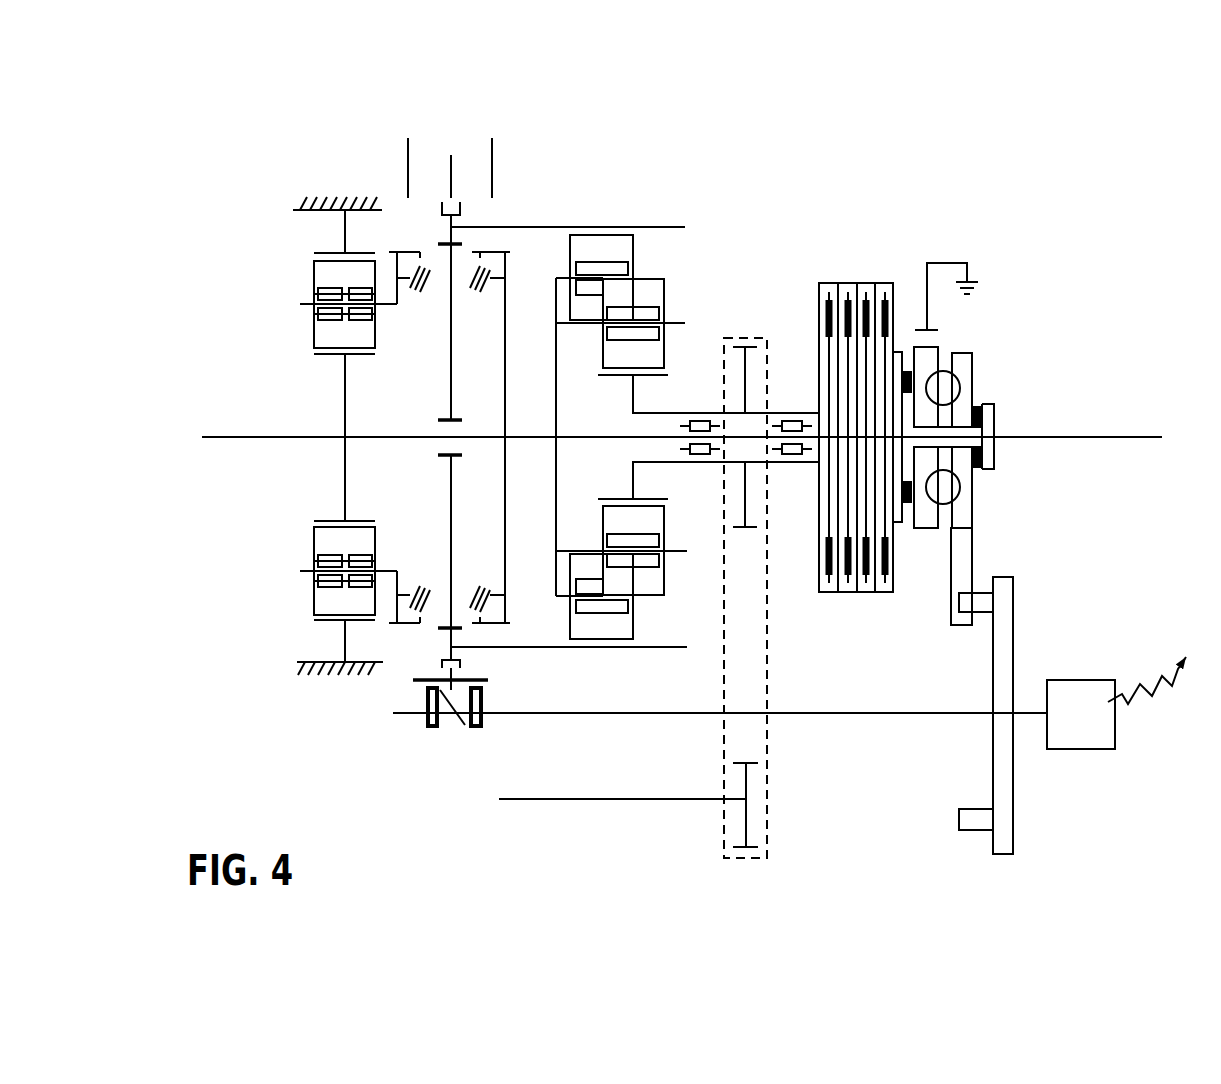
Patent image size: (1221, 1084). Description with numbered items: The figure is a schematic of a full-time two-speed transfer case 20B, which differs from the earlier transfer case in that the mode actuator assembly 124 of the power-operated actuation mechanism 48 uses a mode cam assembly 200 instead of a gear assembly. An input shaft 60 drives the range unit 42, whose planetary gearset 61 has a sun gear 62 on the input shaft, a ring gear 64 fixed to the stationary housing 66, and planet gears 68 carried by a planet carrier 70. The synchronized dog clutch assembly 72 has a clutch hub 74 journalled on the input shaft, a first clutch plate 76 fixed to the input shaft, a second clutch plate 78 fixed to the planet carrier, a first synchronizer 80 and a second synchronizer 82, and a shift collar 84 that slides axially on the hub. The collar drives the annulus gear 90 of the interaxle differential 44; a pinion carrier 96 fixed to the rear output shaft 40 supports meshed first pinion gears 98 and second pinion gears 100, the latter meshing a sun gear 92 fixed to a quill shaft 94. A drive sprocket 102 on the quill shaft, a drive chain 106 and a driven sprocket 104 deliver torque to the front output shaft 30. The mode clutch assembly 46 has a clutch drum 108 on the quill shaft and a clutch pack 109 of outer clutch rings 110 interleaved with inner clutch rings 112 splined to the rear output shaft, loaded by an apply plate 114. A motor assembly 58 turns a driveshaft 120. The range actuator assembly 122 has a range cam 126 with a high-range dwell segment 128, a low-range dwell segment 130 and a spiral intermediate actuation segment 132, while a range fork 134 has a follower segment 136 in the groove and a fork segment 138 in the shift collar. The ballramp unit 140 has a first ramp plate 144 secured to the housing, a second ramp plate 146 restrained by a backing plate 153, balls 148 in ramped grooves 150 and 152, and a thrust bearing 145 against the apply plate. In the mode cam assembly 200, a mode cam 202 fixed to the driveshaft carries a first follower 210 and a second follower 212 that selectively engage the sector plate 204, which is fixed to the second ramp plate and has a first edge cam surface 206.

The transfer case 20B is at (884, 114).
The front output shaft 30 is at (592, 808).
The rear output shaft 40 is at (1160, 437).
The range unit 42 is at (499, 198).
The interaxle differential 44 is at (684, 266).
The mode clutch assembly 46 is at (879, 263).
The power-operated actuation mechanism 48 is at (911, 762).
The motor assembly 58 is at (1080, 695).
The input shaft 60 is at (255, 440).
The planetary gearset 61 is at (288, 554).
The sun gear 62 is at (345, 370).
The ring gear 64 is at (332, 253).
The stationary housing 66 is at (297, 210).
The planet gears 68 is at (322, 272).
The planet carrier 70 is at (398, 562).
The synchronized dog clutch assembly 72 is at (427, 309).
The clutch hub 74 is at (452, 540).
The first clutch plate 76 is at (505, 350).
The second clutch plate 78 is at (408, 586).
The first synchronizer 80 is at (478, 266).
The second synchronizer 82 is at (425, 612).
The shift collar 84 is at (442, 227).
The annulus gear 90 is at (538, 227).
The sun gear 92 is at (635, 490).
The quill shaft 94 is at (645, 413).
The pinion carrier 96 is at (556, 398).
The first pinion gears 98 is at (622, 245).
The second pinion gears 100 is at (660, 290).
The drive sprocket 102 is at (745, 493).
The driven sprocket 104 is at (748, 778).
The drive chain 106 is at (767, 660).
The clutch drum 108 is at (820, 288).
The clutch pack 109 is at (838, 397).
The outer clutch rings 110 is at (837, 290).
The inner clutch rings 112 is at (846, 461).
The apply plate 114 is at (906, 548).
The driveshaft 120 is at (875, 713).
The range actuator assembly 122 is at (438, 742).
The mode actuator assembly 124 is at (1047, 609).
The range cam 126 is at (440, 727).
The high-range dwell segment 128 is at (477, 695).
The low-range dwell segment 130 is at (432, 705).
The spiral intermediate actuation segment 132 is at (468, 723).
The range fork 134 is at (477, 680).
The follower segment 136 is at (455, 690).
The fork segment 138 is at (445, 678).
The ballramp unit 140 is at (976, 345).
The first ramp plate 144 is at (928, 362).
The thrust bearing 145 is at (910, 408).
The second ramp plate 146 is at (962, 404).
The balls 148 is at (948, 388).
The ramped grooves 150 is at (945, 488).
The ramped grooves 152 is at (960, 487).
The backing plate 153 is at (990, 412).
The mode cam assembly 200 is at (986, 569).
The mode cam 202 is at (1005, 663).
The sector plate 204 is at (966, 562).
The first edge cam surface 206 is at (960, 620).
The first follower 210 is at (972, 600).
The second follower 212 is at (972, 822).